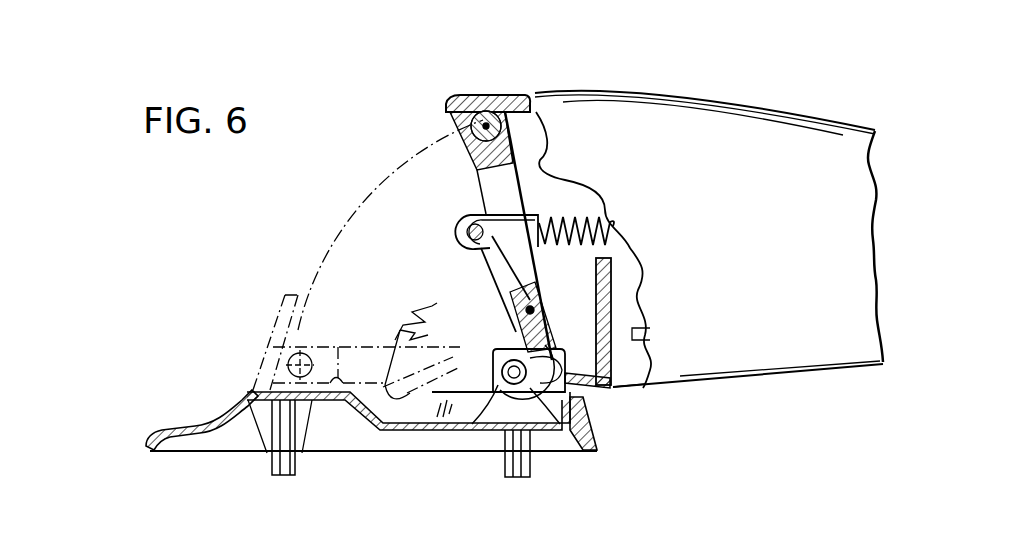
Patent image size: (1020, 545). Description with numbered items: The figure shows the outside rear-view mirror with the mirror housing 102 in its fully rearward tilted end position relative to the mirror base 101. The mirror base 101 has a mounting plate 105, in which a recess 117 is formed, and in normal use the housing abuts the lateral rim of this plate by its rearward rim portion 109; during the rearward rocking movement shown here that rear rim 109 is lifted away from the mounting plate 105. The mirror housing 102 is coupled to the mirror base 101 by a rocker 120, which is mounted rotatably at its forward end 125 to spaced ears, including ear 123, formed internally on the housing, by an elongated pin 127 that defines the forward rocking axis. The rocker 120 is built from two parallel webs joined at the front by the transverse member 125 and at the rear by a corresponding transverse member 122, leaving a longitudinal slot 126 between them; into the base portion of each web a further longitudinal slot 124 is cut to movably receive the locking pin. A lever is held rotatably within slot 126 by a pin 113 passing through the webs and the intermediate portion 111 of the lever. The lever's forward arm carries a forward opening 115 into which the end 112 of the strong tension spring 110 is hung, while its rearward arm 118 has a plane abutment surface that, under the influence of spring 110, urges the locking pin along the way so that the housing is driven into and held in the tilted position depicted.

The mirror base 101 is at (133, 443).
The mirror housing 102 is at (762, 98).
The mounting plate 105 is at (338, 384).
The rearward rim portion 109 is at (593, 390).
The tension spring 110 is at (578, 213).
The intermediate portion of lever 111 is at (550, 311).
The end of tension spring 112 is at (465, 230).
The pin 113 is at (545, 296).
The forward opening 115 is at (493, 274).
The recess 117 is at (423, 437).
The rearward arm of lever 118 is at (640, 387).
The rocker 120 is at (478, 199).
The transverse member 122 is at (555, 400).
The ear 123 is at (495, 100).
The longitudinal slot 124 is at (470, 422).
The forward end of rocker 125 is at (483, 152).
The longitudinal slot 126 is at (510, 182).
The elongated pin 127 is at (484, 130).